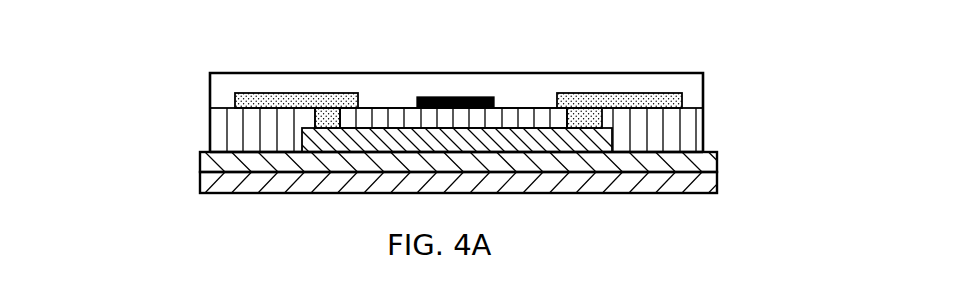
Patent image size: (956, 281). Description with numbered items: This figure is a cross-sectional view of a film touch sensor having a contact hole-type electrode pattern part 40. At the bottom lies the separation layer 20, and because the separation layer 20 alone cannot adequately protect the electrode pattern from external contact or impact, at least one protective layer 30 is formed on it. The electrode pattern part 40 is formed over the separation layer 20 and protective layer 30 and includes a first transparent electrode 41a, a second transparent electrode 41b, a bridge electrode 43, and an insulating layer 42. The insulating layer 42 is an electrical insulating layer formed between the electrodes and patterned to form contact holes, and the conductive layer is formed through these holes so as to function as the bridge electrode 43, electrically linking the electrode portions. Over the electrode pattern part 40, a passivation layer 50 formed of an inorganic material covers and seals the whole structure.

The separation layer 20 is at (718, 182).
The protective layer 30 is at (718, 157).
The electrode pattern part 40 is at (100, 45).
The first transparent electrode 41a is at (420, 97).
The second transparent electrode 41b is at (232, 106).
The insulating layer 42 is at (207, 141).
The bridge electrode 43 is at (280, 158).
The passivation layer 50 is at (703, 78).